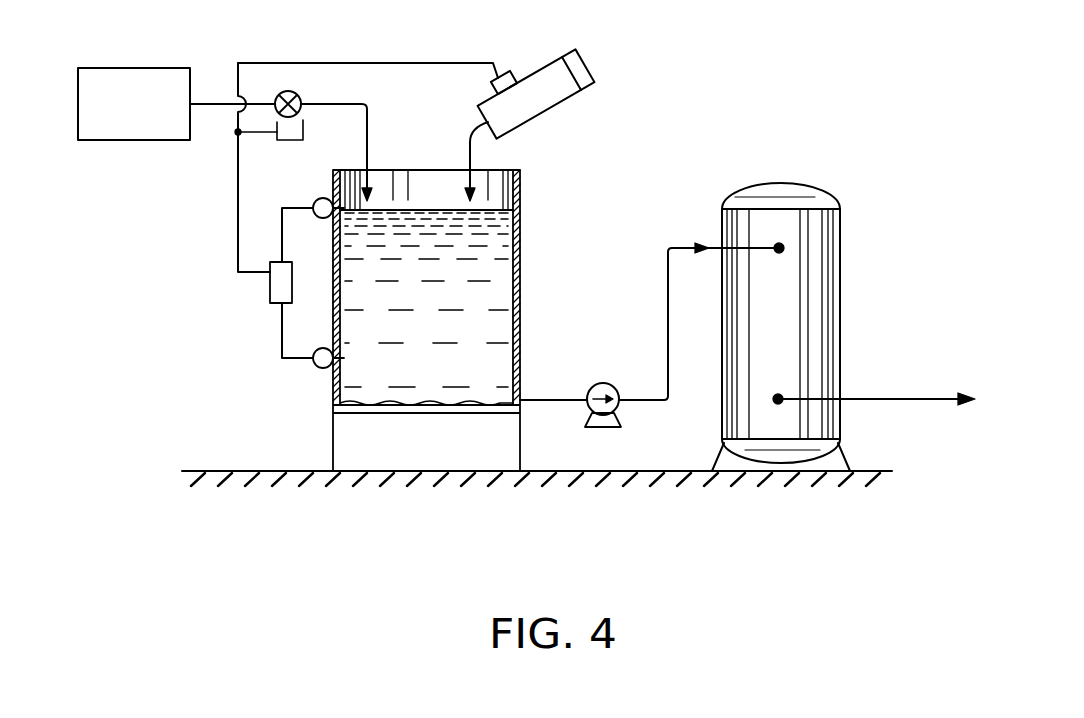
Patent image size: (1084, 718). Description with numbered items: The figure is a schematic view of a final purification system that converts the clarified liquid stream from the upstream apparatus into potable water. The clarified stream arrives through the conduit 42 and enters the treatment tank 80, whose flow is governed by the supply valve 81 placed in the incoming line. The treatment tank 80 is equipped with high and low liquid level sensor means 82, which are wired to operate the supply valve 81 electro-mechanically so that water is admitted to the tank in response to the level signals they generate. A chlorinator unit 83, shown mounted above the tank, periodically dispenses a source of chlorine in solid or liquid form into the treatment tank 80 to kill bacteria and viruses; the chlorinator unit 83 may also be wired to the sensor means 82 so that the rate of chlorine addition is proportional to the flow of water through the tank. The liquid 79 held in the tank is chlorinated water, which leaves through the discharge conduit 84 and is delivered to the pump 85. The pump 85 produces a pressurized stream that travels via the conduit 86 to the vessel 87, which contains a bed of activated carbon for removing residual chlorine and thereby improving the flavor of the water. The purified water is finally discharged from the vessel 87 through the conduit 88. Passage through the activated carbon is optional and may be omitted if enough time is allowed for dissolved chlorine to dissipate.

The conduit 42 is at (201, 101).
The liquid 79 is at (433, 345).
The treatment tank 80 is at (520, 250).
The supply valve 81 is at (303, 101).
The sensor means 82 is at (268, 302).
The chlorinator unit 83 is at (528, 72).
The discharge conduit 84 is at (531, 401).
The pump 85 is at (605, 388).
The conduit 86 is at (676, 243).
The vessel 87 is at (842, 242).
The conduit 88 is at (868, 399).